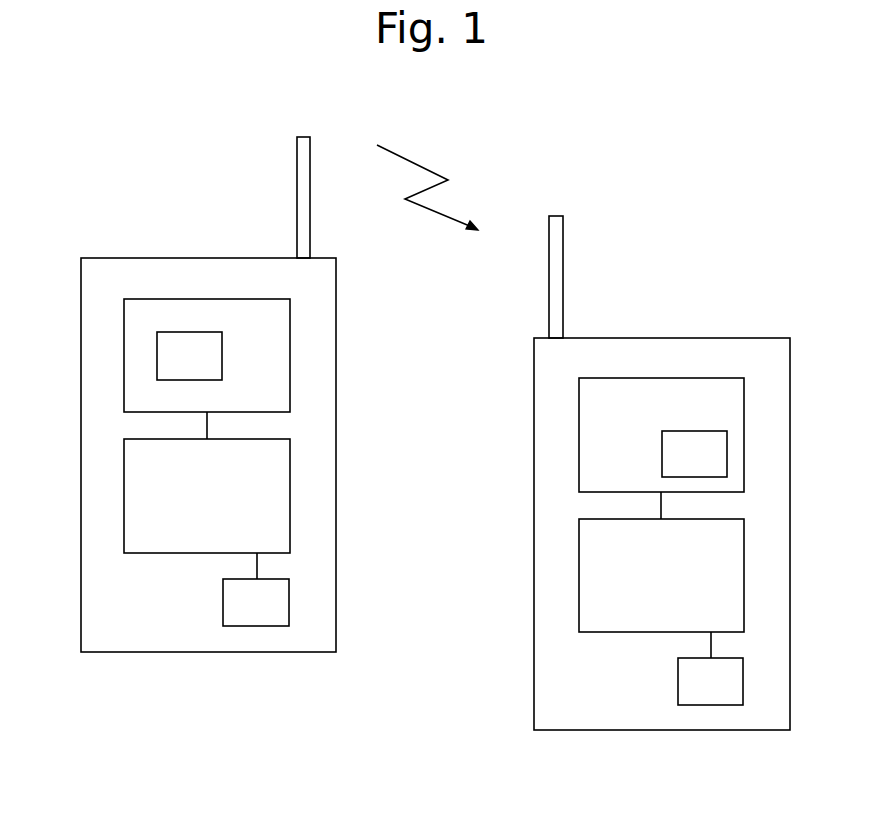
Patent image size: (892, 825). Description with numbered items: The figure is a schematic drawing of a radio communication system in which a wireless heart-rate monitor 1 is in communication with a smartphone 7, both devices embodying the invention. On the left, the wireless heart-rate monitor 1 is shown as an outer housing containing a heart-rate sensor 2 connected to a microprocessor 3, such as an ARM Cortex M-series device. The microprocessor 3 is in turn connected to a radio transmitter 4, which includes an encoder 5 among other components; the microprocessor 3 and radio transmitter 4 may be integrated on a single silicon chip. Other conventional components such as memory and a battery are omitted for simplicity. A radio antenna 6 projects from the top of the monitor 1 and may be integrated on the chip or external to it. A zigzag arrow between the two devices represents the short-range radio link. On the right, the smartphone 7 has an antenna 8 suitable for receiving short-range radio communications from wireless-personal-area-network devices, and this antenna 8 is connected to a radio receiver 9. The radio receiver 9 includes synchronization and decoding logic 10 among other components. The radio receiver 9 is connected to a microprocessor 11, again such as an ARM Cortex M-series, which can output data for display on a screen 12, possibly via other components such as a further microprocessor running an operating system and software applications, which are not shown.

The wireless heart-rate monitor 1 is at (175, 268).
The heart-rate sensor 2 is at (250, 614).
The microprocessor 3 is at (200, 512).
The radio transmitter 4 is at (285, 340).
The encoder 5 is at (182, 368).
The radio antenna 6 is at (297, 173).
The smartphone 7 is at (545, 695).
The antenna 8 is at (555, 238).
The radio receiver 9 is at (590, 436).
The synchronization and decoding logic 10 is at (682, 466).
The microprocessor 11 is at (649, 584).
The screen 12 is at (699, 692).